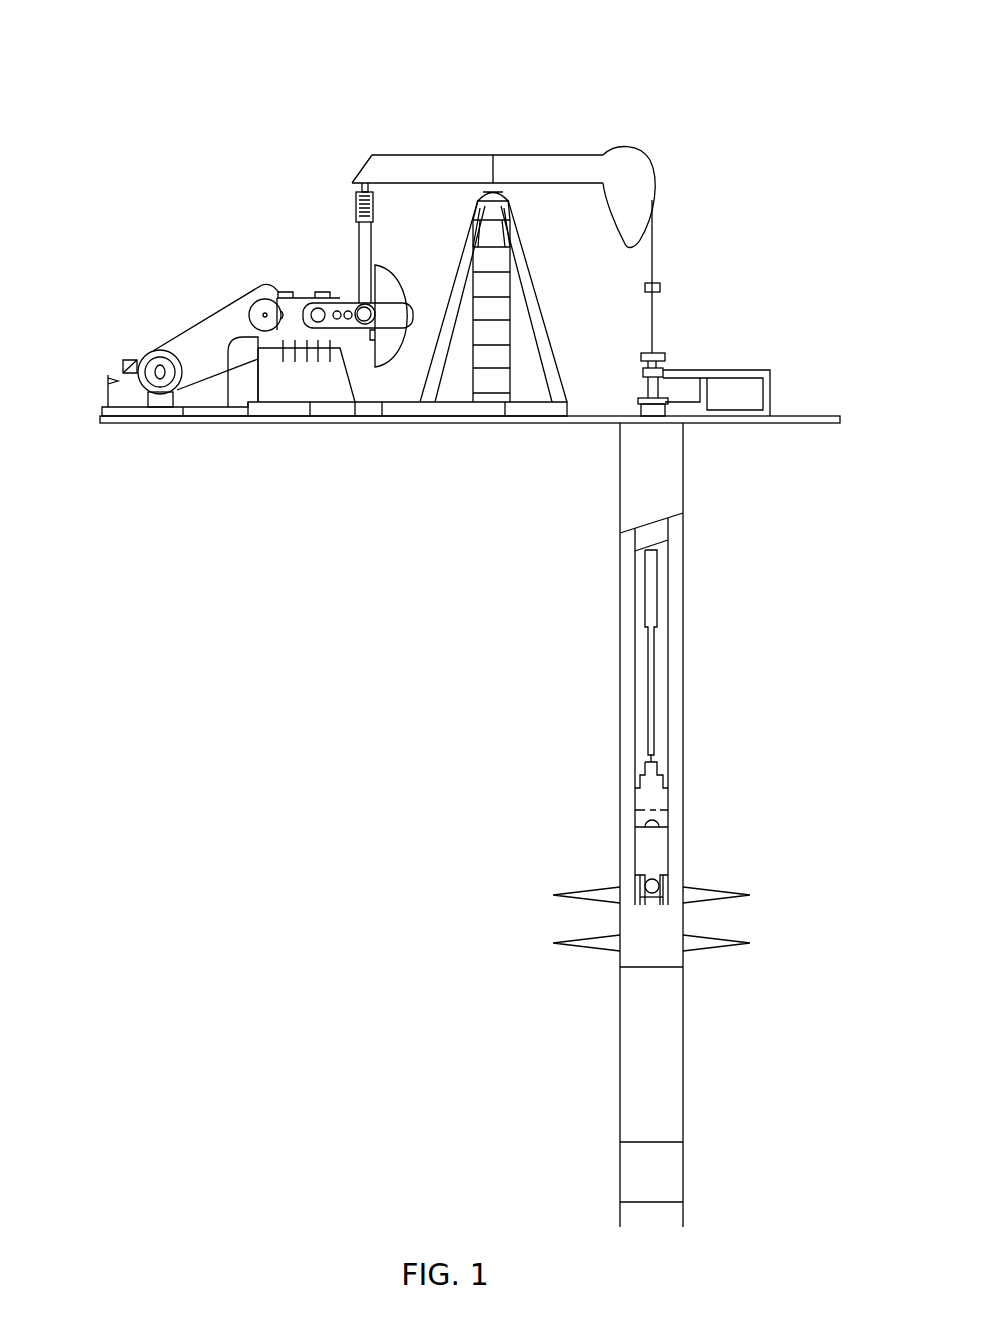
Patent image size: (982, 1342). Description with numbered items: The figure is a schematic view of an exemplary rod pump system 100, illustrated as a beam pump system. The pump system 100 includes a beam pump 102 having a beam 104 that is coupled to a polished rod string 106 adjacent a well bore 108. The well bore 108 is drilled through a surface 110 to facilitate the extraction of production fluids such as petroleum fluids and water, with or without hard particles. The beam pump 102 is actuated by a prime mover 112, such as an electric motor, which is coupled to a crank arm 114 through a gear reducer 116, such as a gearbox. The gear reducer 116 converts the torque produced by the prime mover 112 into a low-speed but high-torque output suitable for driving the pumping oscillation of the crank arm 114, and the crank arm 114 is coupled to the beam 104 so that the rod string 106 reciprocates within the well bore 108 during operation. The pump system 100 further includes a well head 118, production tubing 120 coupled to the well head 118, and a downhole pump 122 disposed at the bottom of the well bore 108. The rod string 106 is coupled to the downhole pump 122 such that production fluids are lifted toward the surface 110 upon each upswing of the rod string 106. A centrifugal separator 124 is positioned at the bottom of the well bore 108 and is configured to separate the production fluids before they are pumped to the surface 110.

The rod pump system 100 is at (680, 62).
The beam pump 102 is at (398, 128).
The beam 104 is at (521, 155).
The polished rod string 106 is at (658, 664).
The well bore 108 is at (620, 494).
The surface 110 is at (805, 415).
The prime mover 112 is at (112, 343).
The crank arm 114 is at (345, 237).
The gear reducer 116 is at (290, 277).
The well head 118 is at (672, 338).
The production tubing 120 is at (662, 572).
The downhole pump 122 is at (672, 812).
The centrifugal separator 124 is at (670, 1163).